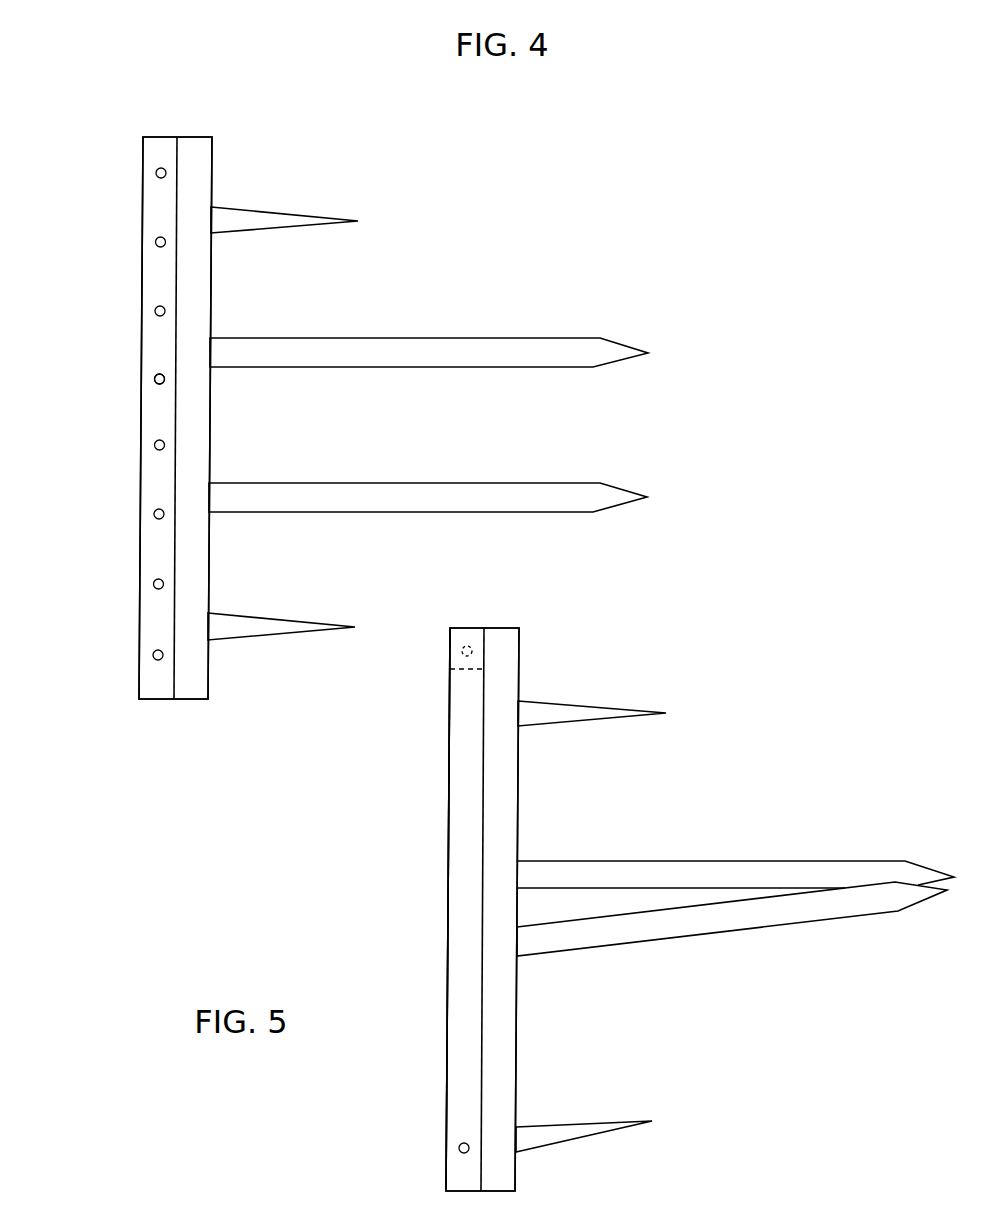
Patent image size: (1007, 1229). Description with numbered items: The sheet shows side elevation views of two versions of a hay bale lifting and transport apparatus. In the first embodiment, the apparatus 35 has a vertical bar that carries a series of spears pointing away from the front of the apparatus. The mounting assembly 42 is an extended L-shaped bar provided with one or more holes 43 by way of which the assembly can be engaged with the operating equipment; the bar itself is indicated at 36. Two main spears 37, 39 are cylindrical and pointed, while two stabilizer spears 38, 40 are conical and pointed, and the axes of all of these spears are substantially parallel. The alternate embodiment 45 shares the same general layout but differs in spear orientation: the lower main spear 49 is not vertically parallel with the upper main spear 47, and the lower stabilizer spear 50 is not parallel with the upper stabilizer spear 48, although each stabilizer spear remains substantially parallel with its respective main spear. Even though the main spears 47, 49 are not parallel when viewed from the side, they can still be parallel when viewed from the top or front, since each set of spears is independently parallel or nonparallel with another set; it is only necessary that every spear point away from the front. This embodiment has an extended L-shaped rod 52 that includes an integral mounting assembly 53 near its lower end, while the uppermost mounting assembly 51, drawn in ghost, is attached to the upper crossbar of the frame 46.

In FIG. 4, the apparatus 35 is at (233, 115).
In FIG. 4, the base bar 36 is at (192, 699).
In FIG. 4, the main spear 37 is at (493, 483).
In FIG. 4, the stabilizer spear 38 is at (287, 212).
In FIG. 4, the main spear 39 is at (493, 338).
In FIG. 4, the stabilizer spear 40 is at (307, 622).
In FIG. 4, the mounting assembly 42 is at (142, 223).
In FIG. 4, the holes 43 is at (154, 379).
In FIG. 5, the alternate embodiment 45 is at (430, 849).
In FIG. 5, the frame 46 is at (500, 628).
In FIG. 5, the main spear 47 is at (679, 861).
In FIG. 5, the stabilizer spear 48 is at (595, 703).
In FIG. 5, the main spear 49 is at (725, 931).
In FIG. 5, the stabilizer spear 50 is at (612, 1115).
In FIG. 5, the uppermost mounting assembly 51 is at (455, 651).
In FIG. 5, the extended L-shaped rod 52 is at (448, 877).
In FIG. 5, the integral mounting assembly 53 is at (457, 1148).